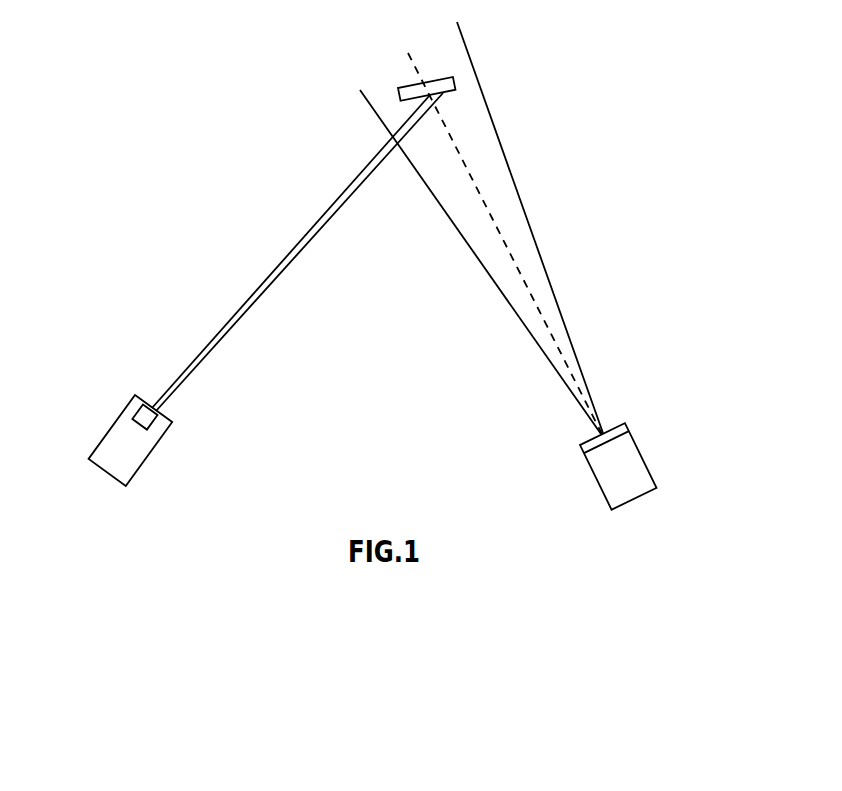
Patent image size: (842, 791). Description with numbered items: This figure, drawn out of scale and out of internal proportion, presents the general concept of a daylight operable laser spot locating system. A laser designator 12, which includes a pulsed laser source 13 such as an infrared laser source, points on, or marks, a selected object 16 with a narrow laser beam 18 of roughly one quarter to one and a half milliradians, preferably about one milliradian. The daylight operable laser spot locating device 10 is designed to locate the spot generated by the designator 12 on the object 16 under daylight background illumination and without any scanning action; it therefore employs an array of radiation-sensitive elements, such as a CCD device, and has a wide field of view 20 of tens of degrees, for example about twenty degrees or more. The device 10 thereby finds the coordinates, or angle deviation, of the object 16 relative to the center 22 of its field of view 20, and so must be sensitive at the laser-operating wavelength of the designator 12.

The daylight operable laser spot locating device 10 is at (623, 460).
The laser designator 12 is at (145, 442).
The pulsed laser source 13 is at (137, 405).
The selected object 16 is at (402, 92).
The narrow laser beam 18 is at (287, 260).
The field of view 20 is at (528, 273).
The center of field of view 22 is at (472, 178).